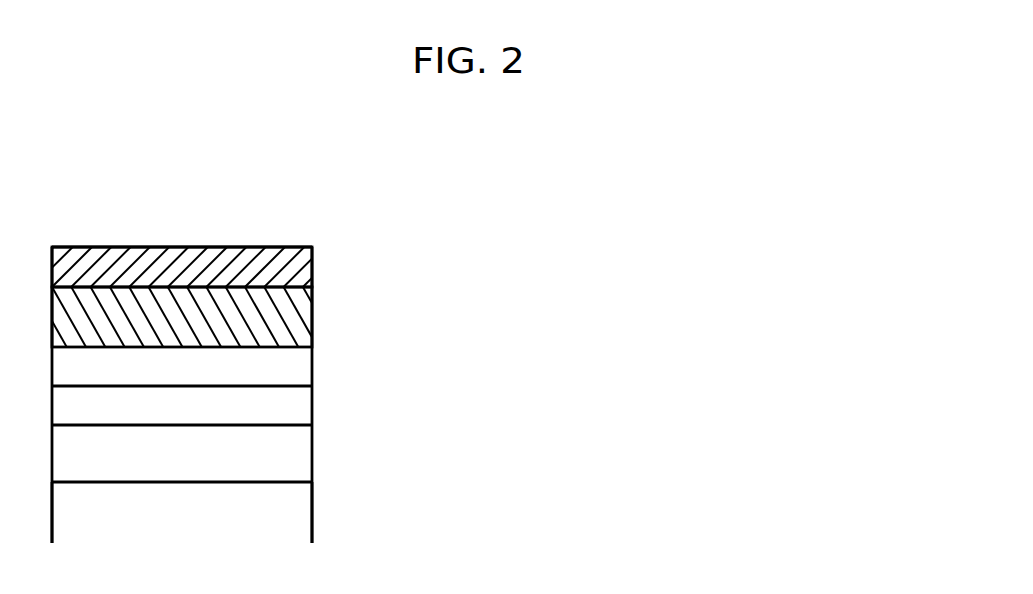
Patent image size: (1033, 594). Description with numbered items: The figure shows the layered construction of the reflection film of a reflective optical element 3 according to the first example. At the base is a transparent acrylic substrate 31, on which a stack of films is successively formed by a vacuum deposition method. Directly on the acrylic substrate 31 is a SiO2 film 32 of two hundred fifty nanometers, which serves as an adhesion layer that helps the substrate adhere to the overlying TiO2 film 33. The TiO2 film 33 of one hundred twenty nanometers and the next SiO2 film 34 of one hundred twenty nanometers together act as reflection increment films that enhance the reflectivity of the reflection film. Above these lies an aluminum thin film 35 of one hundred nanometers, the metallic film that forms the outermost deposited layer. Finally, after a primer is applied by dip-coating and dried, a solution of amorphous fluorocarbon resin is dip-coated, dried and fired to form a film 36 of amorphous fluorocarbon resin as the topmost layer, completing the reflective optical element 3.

The reflective optical element 3 is at (212, 247).
The transparent acrylic substrate 31 is at (293, 513).
The SiO2 film 32 is at (293, 453).
The TiO2 film 33 is at (293, 405).
The SiO2 film 34 is at (293, 368).
The aluminum thin film 35 is at (293, 313).
The film of amorphous fluorocarbon resin 36 is at (293, 268).